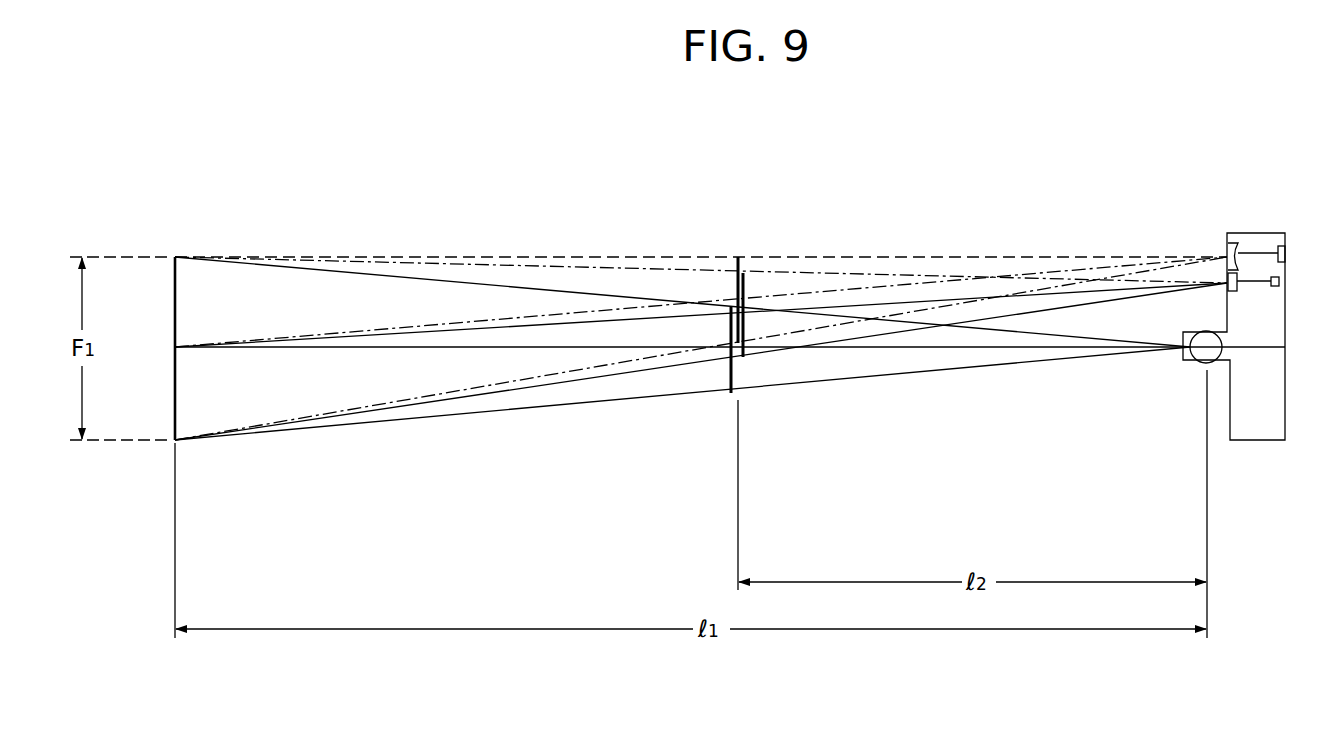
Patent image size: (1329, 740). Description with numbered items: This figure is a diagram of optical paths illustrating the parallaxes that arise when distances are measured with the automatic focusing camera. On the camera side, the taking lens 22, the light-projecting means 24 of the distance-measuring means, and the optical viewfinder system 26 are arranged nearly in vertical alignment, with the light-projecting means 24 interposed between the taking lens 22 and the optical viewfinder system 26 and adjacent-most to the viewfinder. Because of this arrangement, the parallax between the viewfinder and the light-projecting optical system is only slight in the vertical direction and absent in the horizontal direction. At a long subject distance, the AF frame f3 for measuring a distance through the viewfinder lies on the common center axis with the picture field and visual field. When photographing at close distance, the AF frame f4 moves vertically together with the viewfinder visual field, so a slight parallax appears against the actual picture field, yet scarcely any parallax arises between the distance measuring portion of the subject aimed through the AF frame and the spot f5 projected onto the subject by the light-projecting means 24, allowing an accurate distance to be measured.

The taking lens 22 is at (1200, 353).
The light-projecting means 24 is at (1230, 288).
The optical viewfinder system 26 is at (1227, 248).
The AF frame f3 is at (728, 373).
The AF frame f4 is at (736, 264).
The spot f5 is at (745, 287).